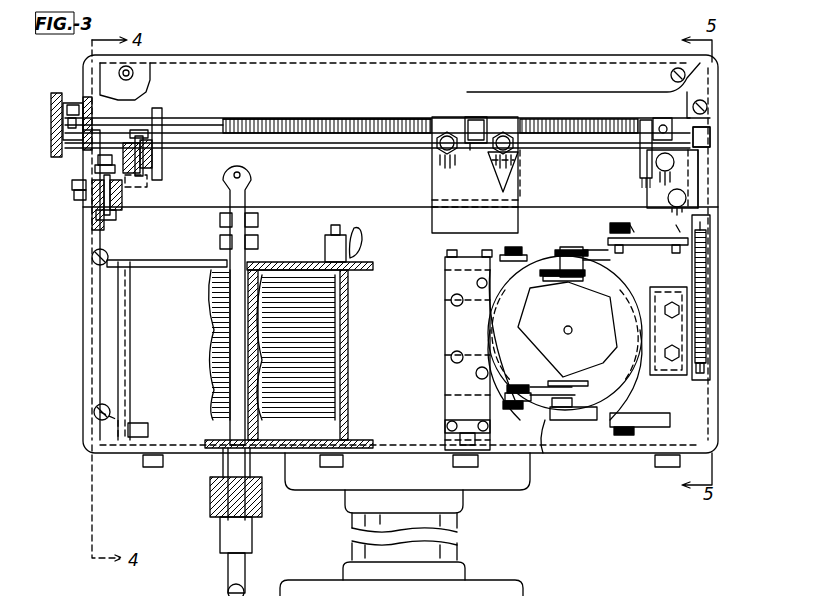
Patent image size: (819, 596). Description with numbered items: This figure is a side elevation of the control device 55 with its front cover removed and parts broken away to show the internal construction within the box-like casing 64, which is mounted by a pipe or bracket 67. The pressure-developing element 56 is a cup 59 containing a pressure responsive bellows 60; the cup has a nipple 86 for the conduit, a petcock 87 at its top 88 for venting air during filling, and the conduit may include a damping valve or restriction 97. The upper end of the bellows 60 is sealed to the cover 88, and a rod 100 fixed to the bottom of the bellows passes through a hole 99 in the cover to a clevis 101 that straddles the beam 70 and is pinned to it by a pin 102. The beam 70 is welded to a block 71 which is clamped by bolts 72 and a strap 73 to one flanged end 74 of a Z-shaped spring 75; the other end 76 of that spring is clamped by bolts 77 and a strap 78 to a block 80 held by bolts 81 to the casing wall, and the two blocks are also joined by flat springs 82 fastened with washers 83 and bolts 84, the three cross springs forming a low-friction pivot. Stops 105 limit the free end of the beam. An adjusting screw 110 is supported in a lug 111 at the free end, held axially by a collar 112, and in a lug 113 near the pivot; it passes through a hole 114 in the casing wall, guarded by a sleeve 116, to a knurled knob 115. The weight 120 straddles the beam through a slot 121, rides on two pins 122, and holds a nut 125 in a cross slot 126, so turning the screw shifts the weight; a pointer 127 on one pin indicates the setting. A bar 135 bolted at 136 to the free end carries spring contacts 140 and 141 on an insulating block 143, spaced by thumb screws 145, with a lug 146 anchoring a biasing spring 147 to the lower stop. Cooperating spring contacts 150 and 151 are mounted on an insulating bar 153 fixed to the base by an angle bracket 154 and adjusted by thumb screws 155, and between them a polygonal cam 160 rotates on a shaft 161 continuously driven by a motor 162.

The control device 55 is at (735, 52).
The casing 64 is at (100, 345).
The knurled adjusting knob 115 is at (50, 122).
The short sleeve 116 is at (70, 103).
The hole 114 is at (72, 105).
The beam 70 is at (360, 140).
The adjusting screw 110 is at (270, 118).
The yoke or lug 113 is at (157, 112).
The bolts 72 is at (140, 130).
The plate or strap 73 is at (152, 145).
The bolts 84 is at (106, 155).
The flanged end 74 is at (150, 158).
The block 71 is at (145, 172).
The plates or washers 83 is at (95, 168).
The flat springs 82 is at (148, 182).
The block 80 is at (72, 185).
The bolts 81 is at (76, 200).
The other end of spring 76 is at (92, 215).
The bolts 77 is at (104, 200).
The Z-shaped spring 75 is at (123, 210).
The plate or strap 78 is at (118, 222).
The clevis 101 is at (250, 192).
The pin 102 is at (243, 174).
The hole 99 is at (226, 265).
The rod 100 is at (222, 315).
The top or cover of cup 88 is at (345, 265).
The cup 59 is at (350, 370).
The pressure responsive bellows 60 is at (320, 322).
The petcock 87 is at (362, 245).
The pressure-developing element 56 is at (303, 252).
The nipple 86 is at (222, 470).
The valve or restriction 97 is at (228, 590).
The pipe or bracket 67 is at (458, 544).
The weight 120 is at (432, 195).
The bolts or pins 122 is at (440, 150).
The nut 125 is at (472, 117).
The pointer 127 is at (515, 165).
The slot 126 is at (480, 150).
The slot 121 is at (522, 185).
The ear or lug 111 is at (640, 140).
The collar 112 is at (662, 118).
The bolted connection 136 is at (682, 195).
The bar 135 is at (690, 207).
The stops 105 is at (705, 143).
The biasing spring 147 is at (705, 280).
The insulating block 143 is at (682, 338).
The lug 146 is at (704, 370).
The thumb screws 145 is at (620, 222).
The spring contact 140 is at (572, 248).
The spring contact 150 is at (585, 274).
The thumb screws 155 is at (515, 250).
The spring contact 151 is at (530, 400).
The spring contact 141 is at (572, 420).
The polygonal cam 160 is at (600, 318).
The shaft 161 is at (564, 330).
The insulating block or bar 153 is at (448, 345).
The angle bracket 154 is at (448, 438).
The motor 162 is at (512, 340).